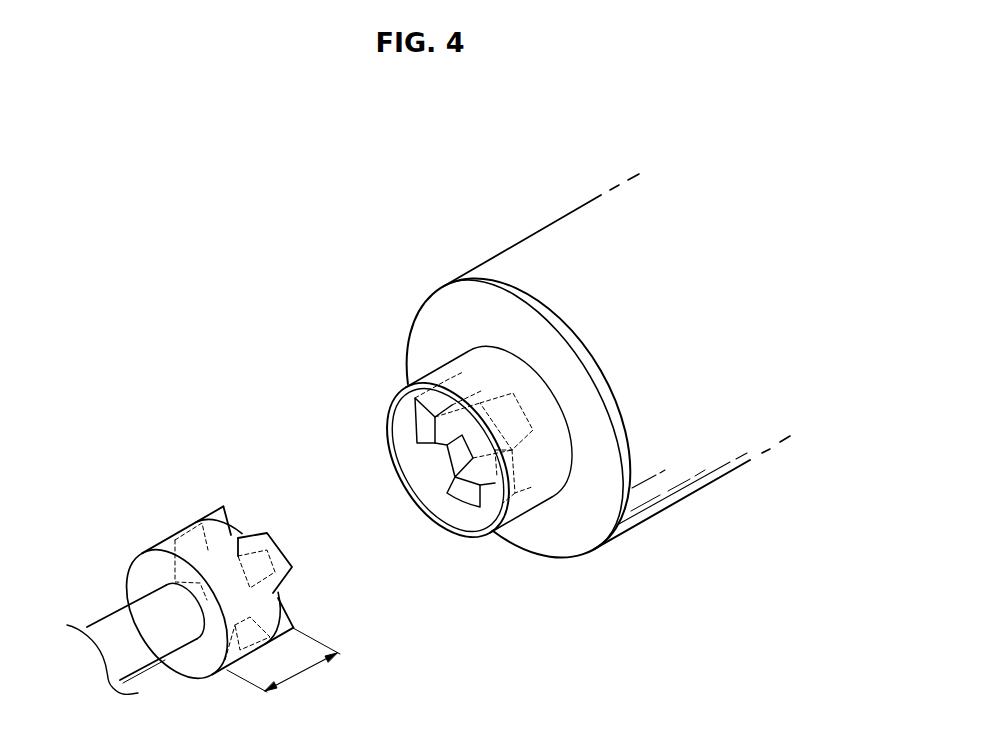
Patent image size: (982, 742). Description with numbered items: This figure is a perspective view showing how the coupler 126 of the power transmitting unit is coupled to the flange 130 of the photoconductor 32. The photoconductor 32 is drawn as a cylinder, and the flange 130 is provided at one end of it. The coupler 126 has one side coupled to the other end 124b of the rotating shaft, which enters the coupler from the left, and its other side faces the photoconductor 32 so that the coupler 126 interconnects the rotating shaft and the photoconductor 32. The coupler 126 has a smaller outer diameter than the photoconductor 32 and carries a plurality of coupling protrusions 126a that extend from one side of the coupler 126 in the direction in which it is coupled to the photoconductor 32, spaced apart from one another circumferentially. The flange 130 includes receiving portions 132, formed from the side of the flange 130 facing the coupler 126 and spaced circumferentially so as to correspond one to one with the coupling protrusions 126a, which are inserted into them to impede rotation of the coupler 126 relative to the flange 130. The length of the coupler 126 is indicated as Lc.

The photoconductor 32 is at (530, 253).
The flange 130 is at (523, 505).
The receiving portions 132 is at (423, 470).
The coupler 126 is at (152, 557).
The coupling protrusions 126a is at (277, 540).
The other end of the rotating shaft 124b is at (107, 627).